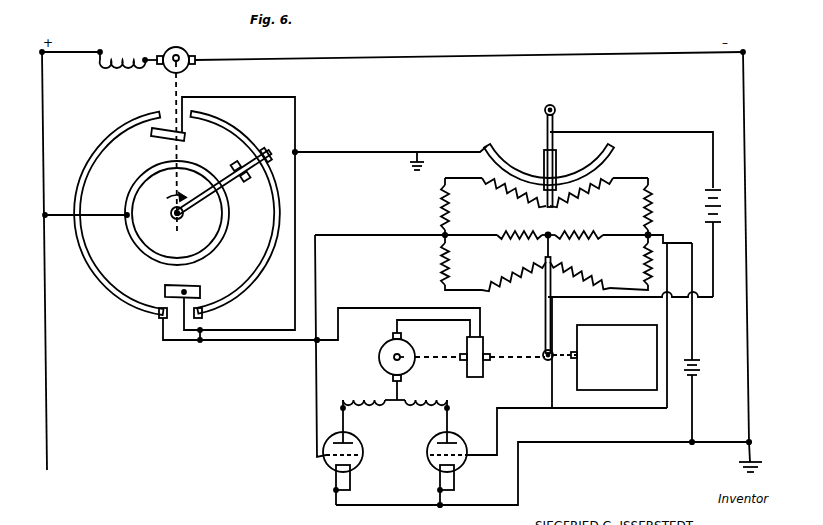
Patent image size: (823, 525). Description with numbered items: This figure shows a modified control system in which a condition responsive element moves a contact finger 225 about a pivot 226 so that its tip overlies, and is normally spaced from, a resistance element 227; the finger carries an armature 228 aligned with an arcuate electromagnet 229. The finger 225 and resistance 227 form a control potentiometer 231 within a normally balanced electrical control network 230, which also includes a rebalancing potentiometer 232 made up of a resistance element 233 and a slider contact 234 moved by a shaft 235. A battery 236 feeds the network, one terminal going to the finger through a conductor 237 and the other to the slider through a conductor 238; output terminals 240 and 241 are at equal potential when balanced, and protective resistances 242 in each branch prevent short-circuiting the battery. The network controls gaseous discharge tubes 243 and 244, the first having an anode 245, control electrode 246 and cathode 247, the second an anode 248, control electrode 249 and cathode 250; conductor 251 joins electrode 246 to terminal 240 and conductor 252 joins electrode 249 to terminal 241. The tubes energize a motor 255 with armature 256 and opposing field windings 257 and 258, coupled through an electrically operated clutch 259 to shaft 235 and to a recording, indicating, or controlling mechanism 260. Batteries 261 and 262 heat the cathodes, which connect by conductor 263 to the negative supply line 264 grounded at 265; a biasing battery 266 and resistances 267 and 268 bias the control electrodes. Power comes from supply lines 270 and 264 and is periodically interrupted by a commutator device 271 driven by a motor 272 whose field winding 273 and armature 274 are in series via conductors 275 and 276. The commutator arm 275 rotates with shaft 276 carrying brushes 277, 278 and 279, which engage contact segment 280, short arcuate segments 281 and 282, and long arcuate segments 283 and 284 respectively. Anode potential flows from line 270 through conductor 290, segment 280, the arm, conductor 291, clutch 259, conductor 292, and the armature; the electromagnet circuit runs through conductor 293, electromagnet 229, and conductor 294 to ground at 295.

The contact finger 225 is at (556, 124).
The pivot 226 is at (556, 107).
The resistance element 227 is at (604, 200).
The armature 228 is at (557, 168).
The electromagnet 229 is at (614, 151).
The electrical control network 230 is at (480, 218).
The control potentiometer 231 is at (530, 141).
The rebalancing potentiometer 232 is at (528, 288).
The resistance element 233 is at (506, 276).
The slider contact 234 is at (553, 264).
The shaft 235 is at (548, 362).
The battery 236 is at (711, 190).
The conductor 237 is at (712, 160).
The conductor 238 is at (713, 257).
The output terminal 240 is at (441, 238).
The output terminal 241 is at (653, 232).
The protective resistances 242 is at (445, 205).
The gaseous discharge tube 243 is at (357, 448).
The gaseous discharge tube 244 is at (459, 446).
The anode 245 is at (346, 441).
The control electrode 246 is at (356, 458).
The cathode 247 is at (352, 470).
The anode 248 is at (451, 440).
The control electrode 249 is at (462, 458).
The cathode 250 is at (458, 470).
The conductor 251 is at (324, 238).
The conductor 252 is at (600, 410).
The motor 255 is at (314, 365).
The armature 256 is at (388, 352).
The field winding 257 is at (373, 398).
The field winding 258 is at (432, 392).
The electrically operated clutch 259 is at (486, 368).
The recording, indicating, or controlling mechanism 260 is at (608, 326).
The battery 261 is at (340, 497).
The battery 262 is at (446, 497).
The conductor 263 is at (558, 446).
The negative supply line 264 is at (751, 335).
The ground 265 is at (739, 462).
The battery 266 is at (704, 360).
The resistance 267 is at (526, 233).
The resistance 268 is at (572, 233).
The positive supply line 270 is at (50, 345).
The commutator device 271 is at (93, 143).
The motor 272 is at (200, 53).
The field winding 273 is at (124, 52).
The armature 274 is at (179, 46).
The commutator arm 275 is at (78, 50).
The shaft 276 is at (541, 50).
The brush 277 is at (246, 186).
The brush 278 is at (239, 164).
The brush 279 is at (266, 150).
The contact segment 280 is at (160, 205).
The short arcuate contact segment 281 is at (152, 140).
The short arcuate contact segment 282 is at (170, 286).
The long arcuate segment 283 is at (135, 197).
The long arcuate segment 284 is at (258, 278).
The conductor 290 is at (58, 208).
The conductor 291 is at (222, 342).
The conductor 292 is at (423, 324).
The conductor 293 is at (378, 151).
The conductor 294 is at (443, 160).
The ground 295 is at (410, 170).